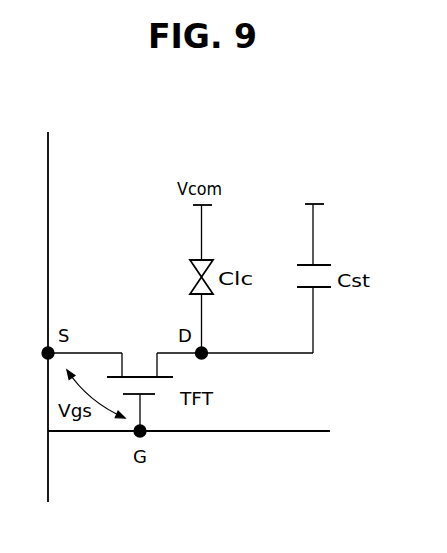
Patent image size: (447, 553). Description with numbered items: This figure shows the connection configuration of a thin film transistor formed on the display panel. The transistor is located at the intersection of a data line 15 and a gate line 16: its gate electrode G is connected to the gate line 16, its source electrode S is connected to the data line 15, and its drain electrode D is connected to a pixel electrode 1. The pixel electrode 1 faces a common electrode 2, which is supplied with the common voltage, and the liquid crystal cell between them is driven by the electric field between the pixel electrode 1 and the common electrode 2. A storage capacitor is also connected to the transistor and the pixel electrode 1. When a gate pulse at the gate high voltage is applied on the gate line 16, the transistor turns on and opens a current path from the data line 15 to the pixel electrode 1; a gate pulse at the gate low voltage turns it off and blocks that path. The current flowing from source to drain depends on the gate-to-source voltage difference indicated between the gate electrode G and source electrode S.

The data line 15 is at (48, 170).
The gate line 16 is at (297, 432).
The common electrode 2 is at (191, 267).
The pixel electrode 1 is at (191, 287).